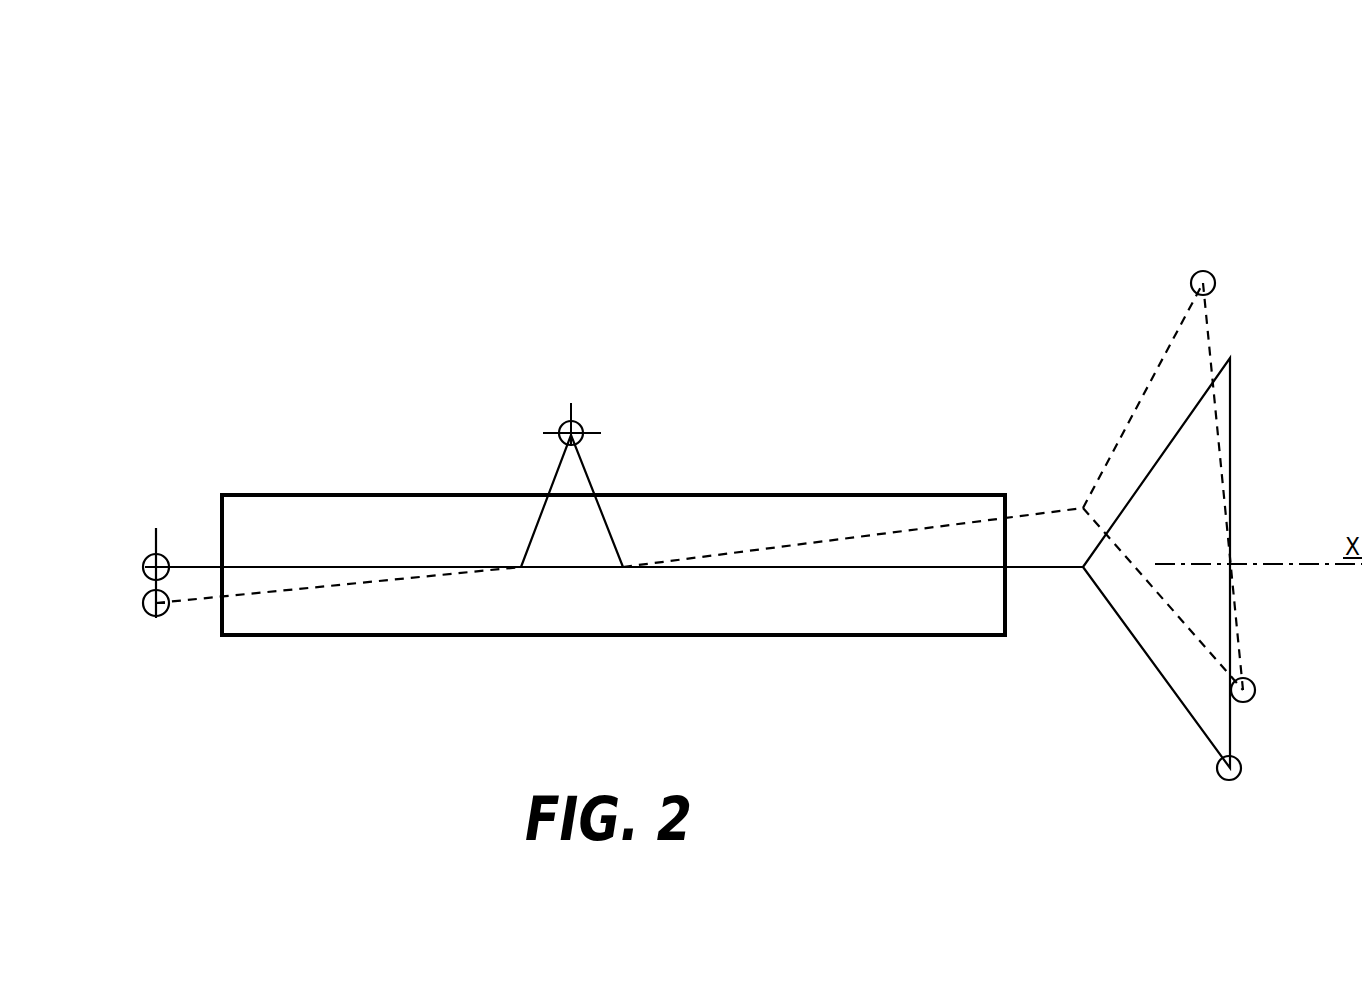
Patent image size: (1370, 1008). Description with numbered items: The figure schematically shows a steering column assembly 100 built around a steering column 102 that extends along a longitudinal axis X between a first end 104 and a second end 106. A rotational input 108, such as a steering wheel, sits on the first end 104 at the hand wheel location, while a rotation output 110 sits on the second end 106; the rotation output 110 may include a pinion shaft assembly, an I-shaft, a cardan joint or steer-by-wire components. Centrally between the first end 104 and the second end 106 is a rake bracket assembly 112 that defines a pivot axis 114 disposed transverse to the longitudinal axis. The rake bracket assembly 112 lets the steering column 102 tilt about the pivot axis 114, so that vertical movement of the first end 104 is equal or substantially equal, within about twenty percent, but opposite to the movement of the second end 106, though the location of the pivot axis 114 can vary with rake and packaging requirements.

The steering column assembly 100 is at (1268, 159).
The steering column 102 is at (820, 566).
The first end 104 is at (1085, 575).
The second end 106 is at (150, 555).
The rotational input 108 is at (1220, 397).
The rotation output 110 is at (141, 532).
The rake bracket assembly 112 is at (596, 487).
The pivot axis 114 is at (562, 428).